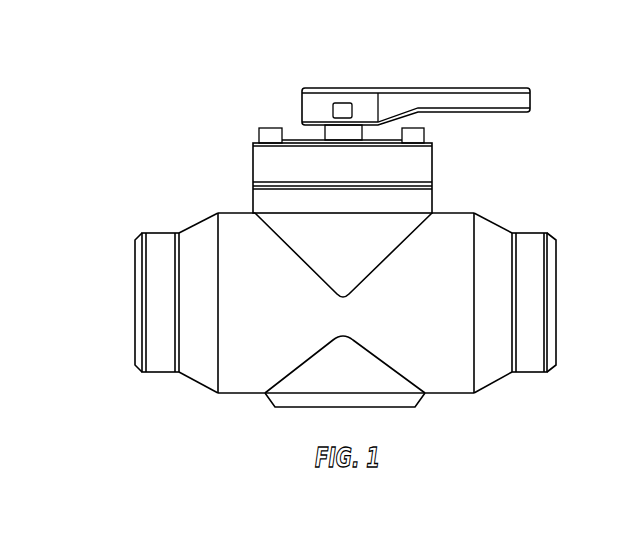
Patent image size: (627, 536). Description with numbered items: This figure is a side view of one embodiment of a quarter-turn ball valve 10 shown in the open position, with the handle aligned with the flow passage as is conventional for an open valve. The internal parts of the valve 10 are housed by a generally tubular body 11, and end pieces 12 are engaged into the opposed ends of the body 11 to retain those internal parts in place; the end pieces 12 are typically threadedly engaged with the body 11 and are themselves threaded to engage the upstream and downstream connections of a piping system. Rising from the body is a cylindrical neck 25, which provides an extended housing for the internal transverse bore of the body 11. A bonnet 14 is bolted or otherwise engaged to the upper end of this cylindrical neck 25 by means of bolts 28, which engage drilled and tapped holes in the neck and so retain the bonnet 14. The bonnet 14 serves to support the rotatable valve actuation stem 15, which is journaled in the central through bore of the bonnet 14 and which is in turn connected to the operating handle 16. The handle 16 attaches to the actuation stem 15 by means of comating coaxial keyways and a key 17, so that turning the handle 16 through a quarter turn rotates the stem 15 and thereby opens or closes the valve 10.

The ball valve 10 is at (170, 163).
The tubular body 11 is at (324, 320).
The end pieces 12 is at (557, 323).
The bonnet 14 is at (339, 157).
The valve actuation stem 15 is at (317, 119).
The operating handle 16 is at (421, 88).
The key 17 is at (365, 85).
The cylindrical neck 25 is at (376, 180).
The bolts 28 is at (341, 151).